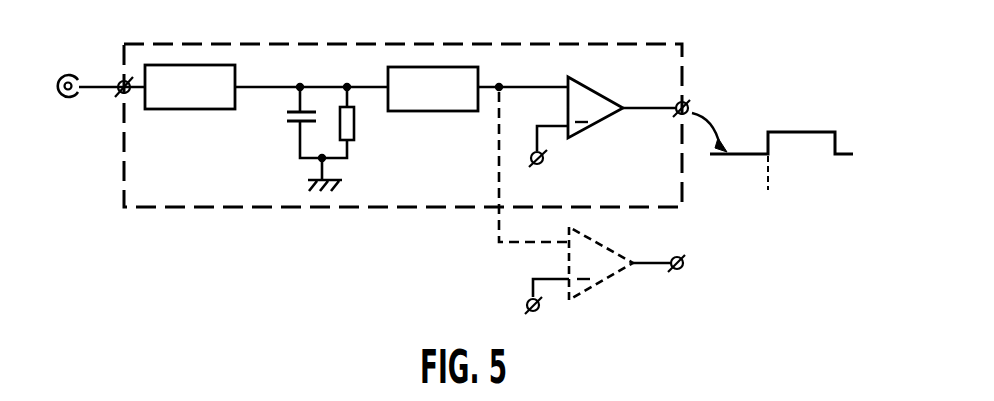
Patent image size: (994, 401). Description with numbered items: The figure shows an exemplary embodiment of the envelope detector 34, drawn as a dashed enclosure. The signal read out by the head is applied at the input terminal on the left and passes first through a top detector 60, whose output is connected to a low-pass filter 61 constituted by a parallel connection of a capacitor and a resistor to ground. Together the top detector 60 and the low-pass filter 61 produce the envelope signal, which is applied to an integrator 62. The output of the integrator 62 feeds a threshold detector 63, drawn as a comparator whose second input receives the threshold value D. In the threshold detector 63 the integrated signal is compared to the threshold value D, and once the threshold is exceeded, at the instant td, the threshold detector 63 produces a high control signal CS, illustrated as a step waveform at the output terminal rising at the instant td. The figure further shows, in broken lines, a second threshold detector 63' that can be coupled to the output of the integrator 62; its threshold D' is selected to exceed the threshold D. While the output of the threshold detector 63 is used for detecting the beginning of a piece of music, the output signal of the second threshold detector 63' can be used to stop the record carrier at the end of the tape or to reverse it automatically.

The envelope detector 34 is at (590, 43).
The top detector 60 is at (205, 110).
The low-pass filter 61 is at (329, 148).
The integrator 62 is at (413, 111).
The threshold detector 63 is at (609, 133).
The second threshold detector 63' is at (592, 212).
The threshold value D is at (538, 174).
The control signal CS is at (772, 155).
The instant td is at (771, 188).